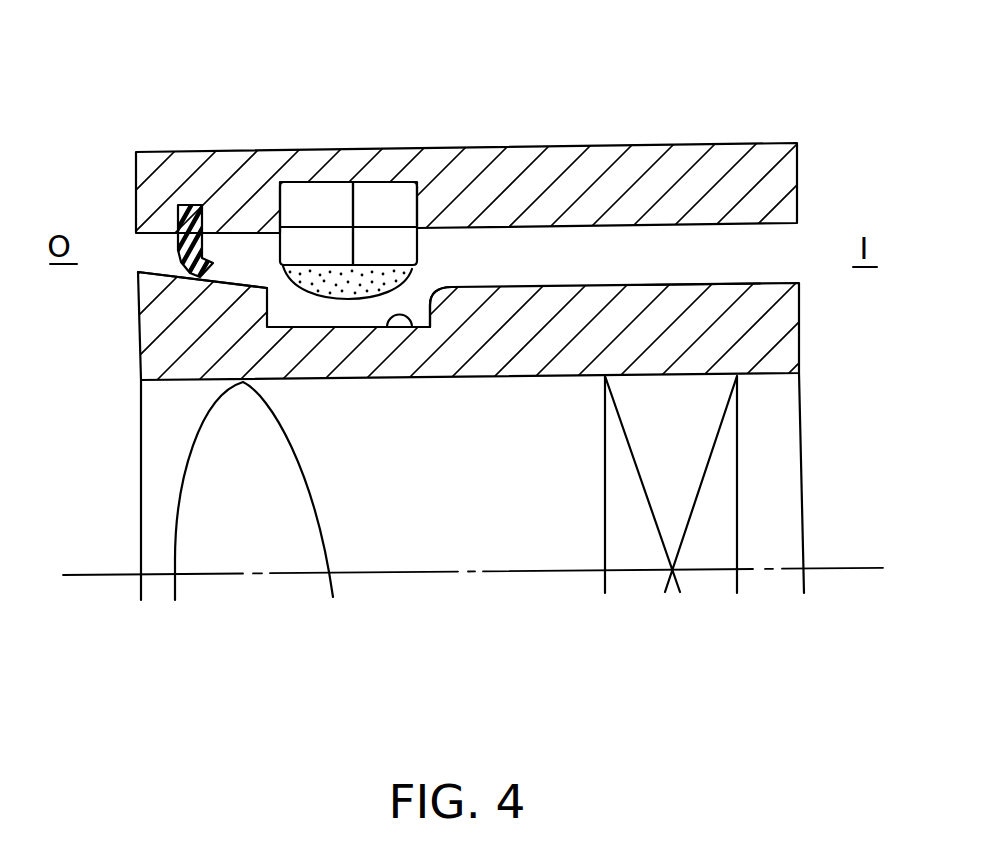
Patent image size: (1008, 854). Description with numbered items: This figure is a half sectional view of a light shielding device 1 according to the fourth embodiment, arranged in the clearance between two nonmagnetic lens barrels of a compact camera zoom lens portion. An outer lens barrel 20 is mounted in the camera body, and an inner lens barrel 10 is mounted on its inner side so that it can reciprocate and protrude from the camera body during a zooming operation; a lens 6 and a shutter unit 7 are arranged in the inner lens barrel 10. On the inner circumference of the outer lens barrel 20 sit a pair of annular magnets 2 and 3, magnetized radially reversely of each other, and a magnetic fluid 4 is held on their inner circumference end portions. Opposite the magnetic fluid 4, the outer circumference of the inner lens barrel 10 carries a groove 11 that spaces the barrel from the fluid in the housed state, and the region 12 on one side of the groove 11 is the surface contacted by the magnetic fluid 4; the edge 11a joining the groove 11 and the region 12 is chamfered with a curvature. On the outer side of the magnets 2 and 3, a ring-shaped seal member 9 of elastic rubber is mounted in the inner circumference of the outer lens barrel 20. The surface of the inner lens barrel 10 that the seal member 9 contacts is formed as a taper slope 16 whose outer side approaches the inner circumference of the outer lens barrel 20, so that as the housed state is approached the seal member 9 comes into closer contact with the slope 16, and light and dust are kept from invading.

The light shielding device 1 is at (333, 148).
The annular magnet 2 is at (285, 192).
The annular magnet 3 is at (402, 181).
The magnetic fluid 4 is at (420, 272).
The lens 6 is at (233, 553).
The shutter unit 7 is at (713, 558).
The seal member 9 is at (195, 205).
The lens barrel 10 is at (793, 343).
The groove 11 is at (412, 327).
The edge of the groove 11a is at (440, 292).
The region 12 is at (697, 283).
The taper slope 16 is at (240, 283).
The outer lens barrel 20 is at (785, 180).